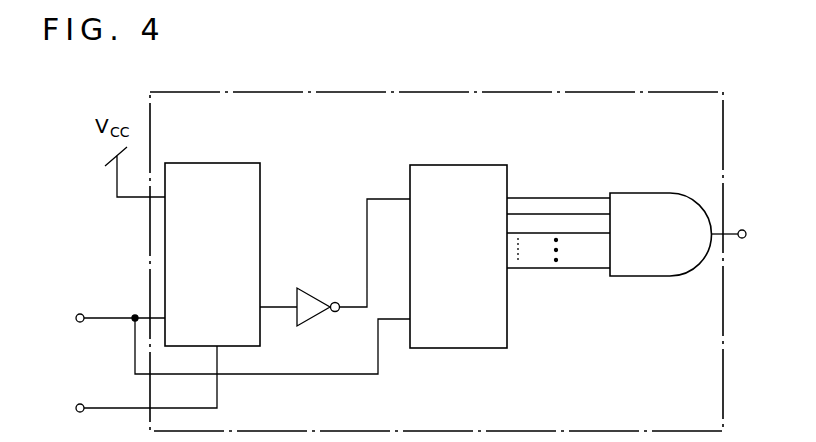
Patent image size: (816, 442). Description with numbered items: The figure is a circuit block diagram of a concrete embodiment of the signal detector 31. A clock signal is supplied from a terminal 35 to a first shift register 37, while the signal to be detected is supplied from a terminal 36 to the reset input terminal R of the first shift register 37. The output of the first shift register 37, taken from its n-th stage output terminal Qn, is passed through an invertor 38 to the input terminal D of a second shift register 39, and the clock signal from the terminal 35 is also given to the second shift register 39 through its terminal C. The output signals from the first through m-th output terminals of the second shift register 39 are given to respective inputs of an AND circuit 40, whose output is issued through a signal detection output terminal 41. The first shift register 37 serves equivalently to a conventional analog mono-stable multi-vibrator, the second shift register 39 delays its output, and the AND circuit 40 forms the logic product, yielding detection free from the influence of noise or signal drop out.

The signal detector 31 is at (272, 92).
The terminal 35 is at (79, 314).
The terminal 36 is at (79, 404).
The first shift register 37 is at (228, 163).
The invertor 38 is at (312, 288).
The second shift register 39 is at (475, 165).
The AND circuit 40 is at (660, 193).
The signal detection output terminal 41 is at (742, 230).